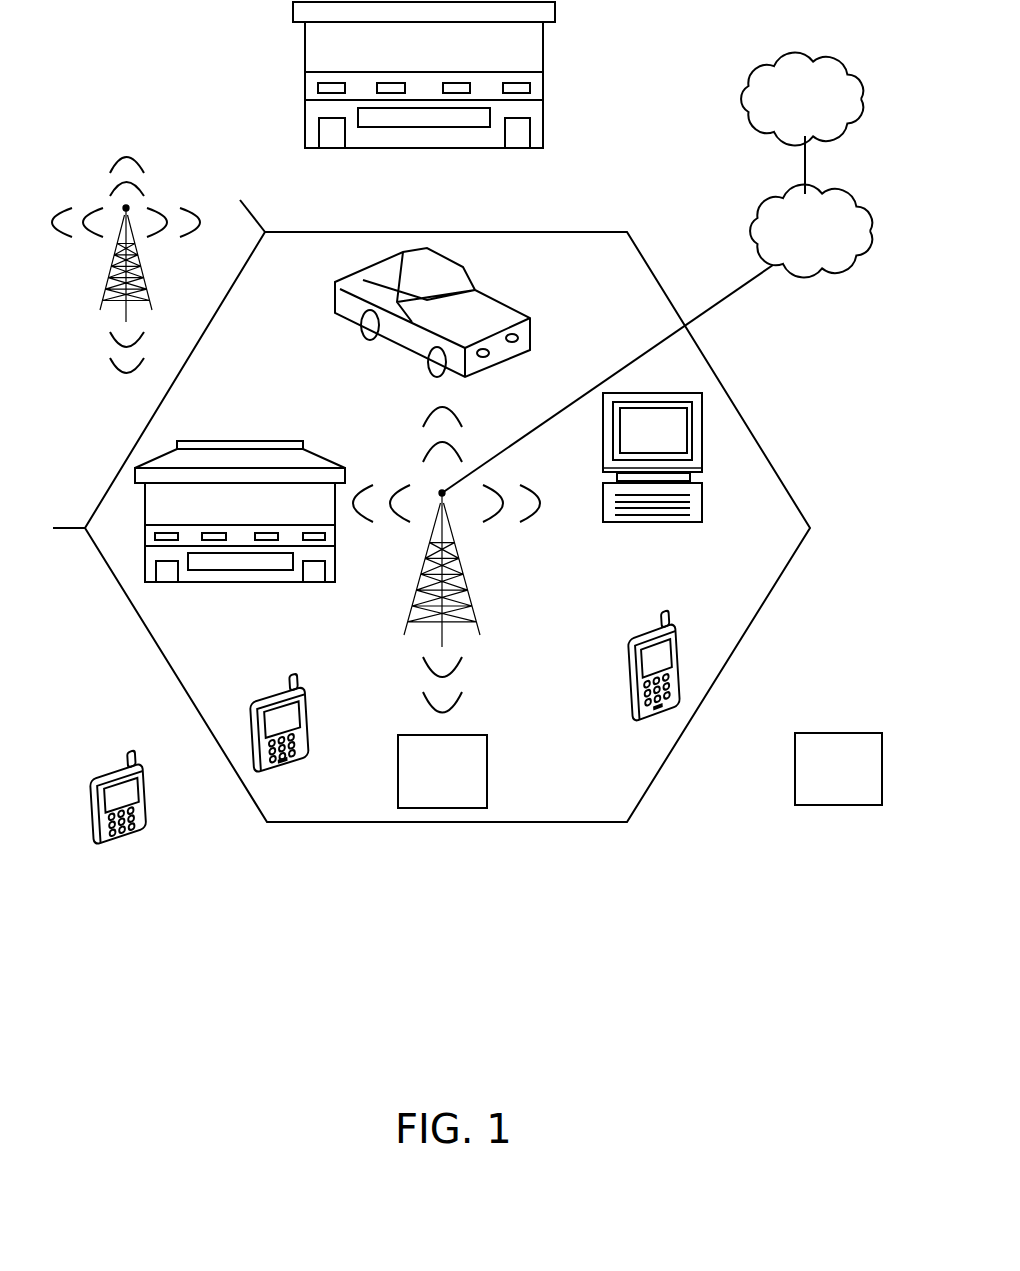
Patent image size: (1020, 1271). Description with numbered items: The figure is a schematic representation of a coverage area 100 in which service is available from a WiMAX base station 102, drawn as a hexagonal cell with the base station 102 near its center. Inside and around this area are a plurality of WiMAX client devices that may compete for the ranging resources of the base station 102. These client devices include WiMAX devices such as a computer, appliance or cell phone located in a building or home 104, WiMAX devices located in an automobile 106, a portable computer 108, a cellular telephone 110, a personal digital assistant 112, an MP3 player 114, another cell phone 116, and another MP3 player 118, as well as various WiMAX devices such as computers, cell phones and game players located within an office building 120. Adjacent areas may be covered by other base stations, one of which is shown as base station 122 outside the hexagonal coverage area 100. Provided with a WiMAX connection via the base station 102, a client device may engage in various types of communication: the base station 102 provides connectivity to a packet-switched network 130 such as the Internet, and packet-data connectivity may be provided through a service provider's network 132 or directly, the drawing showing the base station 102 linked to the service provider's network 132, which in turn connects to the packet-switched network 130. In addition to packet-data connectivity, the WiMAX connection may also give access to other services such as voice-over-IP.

The coverage area 100 is at (513, 825).
The WiMAX base station 102 is at (470, 607).
The building or home 104 is at (242, 440).
The automobile 106 is at (533, 338).
The portable computer 108 is at (705, 505).
The cellular telephone 110 is at (623, 700).
The personal digital assistant 112 is at (310, 742).
The MP3 player 114 is at (487, 772).
The cell phone 116 is at (143, 823).
The MP3 player 118 is at (792, 790).
The office building 120 is at (545, 110).
The base station 122 is at (145, 293).
The packet-switched network 130 is at (748, 120).
The service provider's network 132 is at (752, 222).